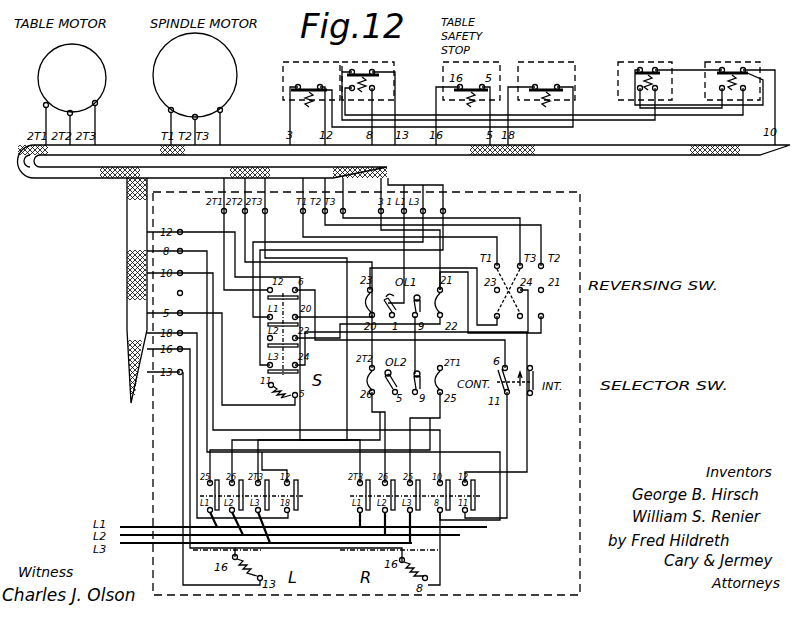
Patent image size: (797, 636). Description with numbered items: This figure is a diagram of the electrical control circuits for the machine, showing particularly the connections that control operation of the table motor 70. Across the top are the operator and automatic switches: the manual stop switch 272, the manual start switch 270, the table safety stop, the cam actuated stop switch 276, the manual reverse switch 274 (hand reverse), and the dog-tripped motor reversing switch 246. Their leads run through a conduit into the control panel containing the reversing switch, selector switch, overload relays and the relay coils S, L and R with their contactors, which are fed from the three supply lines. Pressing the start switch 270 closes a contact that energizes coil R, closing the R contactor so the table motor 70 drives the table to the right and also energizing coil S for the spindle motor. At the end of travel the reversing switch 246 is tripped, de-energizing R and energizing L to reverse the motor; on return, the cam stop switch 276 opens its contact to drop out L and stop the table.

The table motor 70 is at (72, 94).
The manual stop switch 272 is at (299, 92).
The manual start switch 270 is at (382, 78).
The cam actuated stop switch 276 is at (560, 100).
The manual reverse switch 274 is at (660, 62).
The motor reversing switch 246 is at (746, 62).